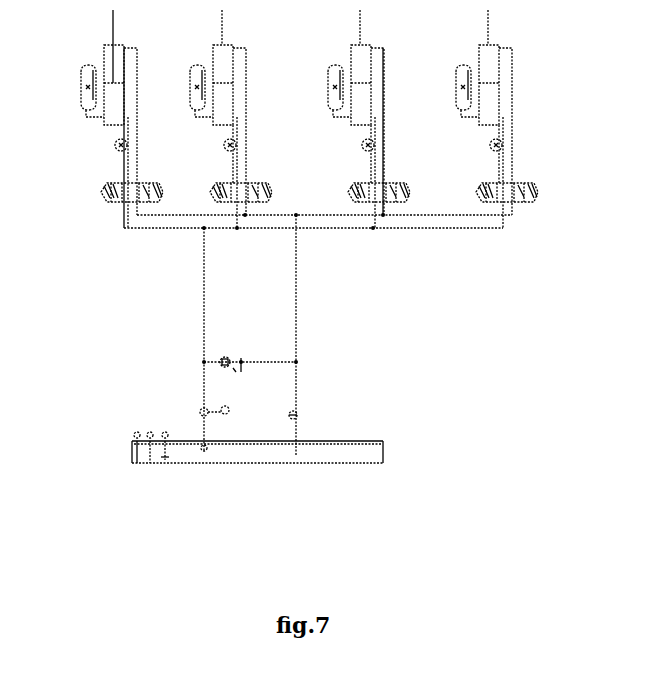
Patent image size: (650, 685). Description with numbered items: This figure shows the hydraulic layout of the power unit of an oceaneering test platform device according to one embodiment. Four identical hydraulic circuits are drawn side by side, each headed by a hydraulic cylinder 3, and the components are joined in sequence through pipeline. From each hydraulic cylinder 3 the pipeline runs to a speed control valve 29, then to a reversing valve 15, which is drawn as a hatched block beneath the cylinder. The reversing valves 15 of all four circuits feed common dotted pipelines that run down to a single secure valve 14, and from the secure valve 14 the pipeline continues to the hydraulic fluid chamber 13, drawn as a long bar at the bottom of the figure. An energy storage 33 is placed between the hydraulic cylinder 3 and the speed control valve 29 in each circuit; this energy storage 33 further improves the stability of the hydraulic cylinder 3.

The hydraulic cylinder 3 is at (125, 86).
The energy storage 33 is at (86, 96).
The speed control valve 29 is at (114, 150).
The reversing valve 15 is at (109, 203).
The secure valve 14 is at (230, 357).
The hydraulic fluid chamber 13 is at (320, 452).